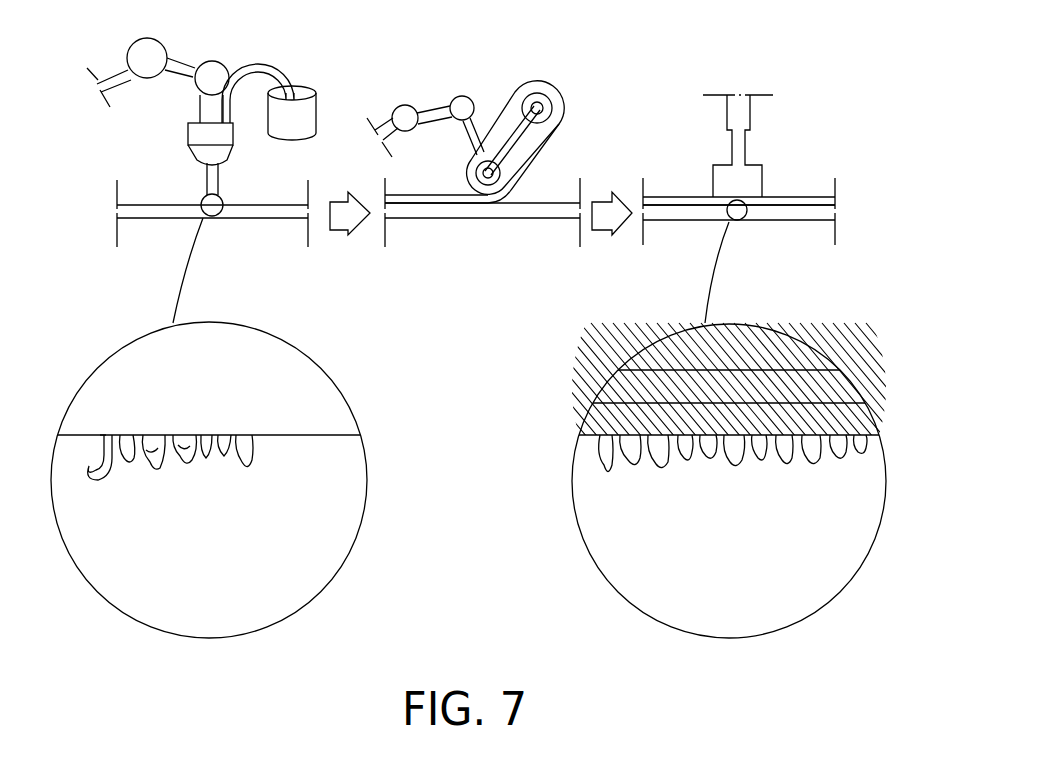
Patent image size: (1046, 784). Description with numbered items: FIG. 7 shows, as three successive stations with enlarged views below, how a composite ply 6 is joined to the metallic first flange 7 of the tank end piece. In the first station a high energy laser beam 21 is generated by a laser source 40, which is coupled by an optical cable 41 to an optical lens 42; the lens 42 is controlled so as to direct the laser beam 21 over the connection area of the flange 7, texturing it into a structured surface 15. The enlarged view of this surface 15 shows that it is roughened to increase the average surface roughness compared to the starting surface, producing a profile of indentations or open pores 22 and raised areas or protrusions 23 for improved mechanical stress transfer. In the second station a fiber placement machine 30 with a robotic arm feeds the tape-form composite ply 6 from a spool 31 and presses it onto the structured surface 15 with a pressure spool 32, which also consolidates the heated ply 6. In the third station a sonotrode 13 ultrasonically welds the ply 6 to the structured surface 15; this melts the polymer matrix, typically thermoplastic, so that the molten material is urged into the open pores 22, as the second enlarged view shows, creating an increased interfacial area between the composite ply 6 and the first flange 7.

The composite ply 6 is at (565, 115).
The first flange 7 is at (228, 224).
The sonotrode 13 is at (763, 173).
The structured connection area 15 is at (132, 204).
The laser beam 21 is at (203, 181).
The open pores 22 is at (187, 468).
The protrusions 23 is at (115, 447).
The fiber placement machine 30 is at (440, 100).
The spool 31 is at (560, 77).
The pressure spool 32 is at (520, 166).
The laser source 40 is at (316, 80).
The optical cable 41 is at (278, 56).
The optical lens 42 is at (184, 146).